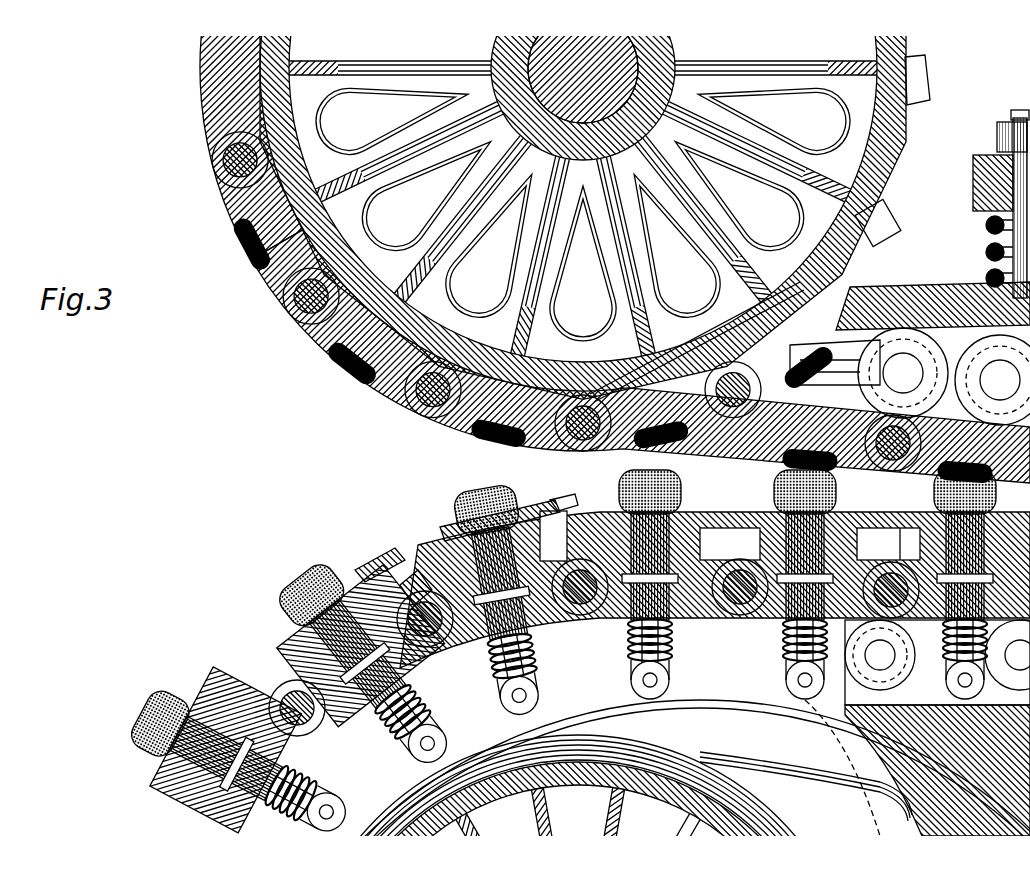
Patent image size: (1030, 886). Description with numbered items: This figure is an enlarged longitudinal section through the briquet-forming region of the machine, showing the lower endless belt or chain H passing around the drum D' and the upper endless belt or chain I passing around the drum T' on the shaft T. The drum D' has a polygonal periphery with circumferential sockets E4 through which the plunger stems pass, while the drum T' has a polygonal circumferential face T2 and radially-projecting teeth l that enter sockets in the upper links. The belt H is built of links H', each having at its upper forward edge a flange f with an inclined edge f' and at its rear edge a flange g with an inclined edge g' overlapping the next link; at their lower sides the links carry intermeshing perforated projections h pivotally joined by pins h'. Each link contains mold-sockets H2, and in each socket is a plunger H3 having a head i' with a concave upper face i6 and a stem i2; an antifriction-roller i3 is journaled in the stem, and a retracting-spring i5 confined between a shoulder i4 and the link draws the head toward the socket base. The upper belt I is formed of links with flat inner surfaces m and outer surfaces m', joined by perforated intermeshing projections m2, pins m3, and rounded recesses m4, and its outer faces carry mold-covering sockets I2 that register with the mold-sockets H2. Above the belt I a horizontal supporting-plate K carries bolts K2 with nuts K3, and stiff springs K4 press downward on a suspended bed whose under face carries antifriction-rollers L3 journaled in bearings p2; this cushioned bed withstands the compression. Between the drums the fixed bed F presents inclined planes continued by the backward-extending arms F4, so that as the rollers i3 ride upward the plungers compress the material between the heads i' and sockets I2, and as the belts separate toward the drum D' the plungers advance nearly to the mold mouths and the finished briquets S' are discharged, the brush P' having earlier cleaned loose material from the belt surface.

The shaft T is at (515, 443).
The drum T' is at (515, 443).
The polygonal circumferential face T2 is at (300, 114).
The endless belt or chain I is at (515, 443).
The mold-covering sections or sockets I2 is at (515, 443).
The flat inner surface m is at (515, 443).
The outer surface m' is at (515, 443).
The perforated intermeshing projections m2 is at (515, 443).
The pins m3 is at (531, 346).
The rounded recesses m4 is at (627, 413).
The radially-projecting teeth l is at (925, 88).
The supporting-plate K is at (975, 195).
The bolts K2 is at (1020, 110).
The nuts K3 is at (996, 140).
The stiff springs K4 is at (985, 252).
The antifriction-rollers L3 is at (515, 443).
The brush P' is at (886, 336).
The bearings p2 is at (868, 365).
The endless belt or chain H is at (515, 443).
The slats or links H' is at (515, 443).
The mold-sockets H2 is at (195, 800).
The plunger H3 is at (730, 544).
The perforated projections h is at (515, 443).
The pins h' is at (515, 443).
The briquets S' is at (548, 615).
The plunger head i' is at (906, 544).
The shank or stem i2 is at (888, 544).
The antifriction-roller i3 is at (675, 688).
The shoulder i4 is at (700, 650).
The retracting-spring i5 is at (688, 628).
The concave upper face i6 is at (222, 727).
The forward-extending flange f is at (515, 443).
The inclined edge f' is at (485, 523).
The backward-extending flange g is at (515, 443).
The inclined edge g' is at (515, 443).
The drum D' is at (515, 443).
The bed F is at (515, 443).
The backward-extending arms F4 is at (625, 793).
The circumferential sockets E4 is at (806, 786).